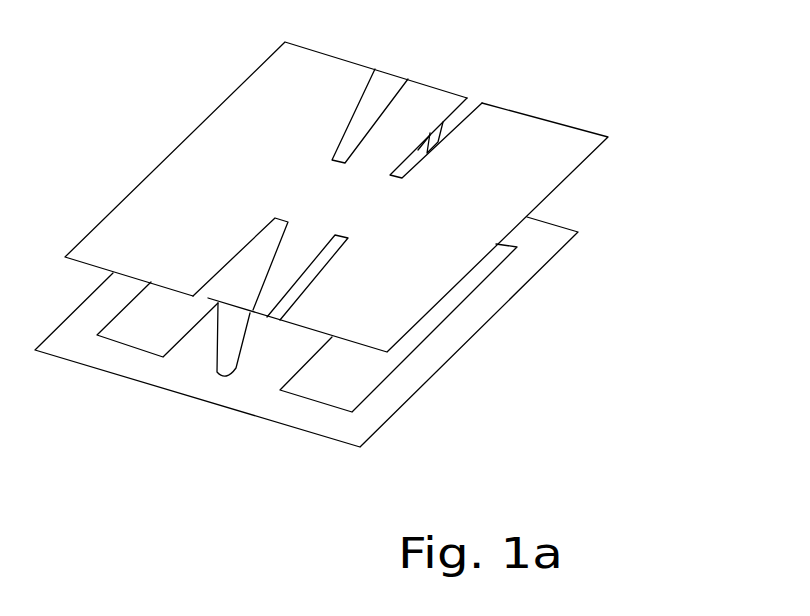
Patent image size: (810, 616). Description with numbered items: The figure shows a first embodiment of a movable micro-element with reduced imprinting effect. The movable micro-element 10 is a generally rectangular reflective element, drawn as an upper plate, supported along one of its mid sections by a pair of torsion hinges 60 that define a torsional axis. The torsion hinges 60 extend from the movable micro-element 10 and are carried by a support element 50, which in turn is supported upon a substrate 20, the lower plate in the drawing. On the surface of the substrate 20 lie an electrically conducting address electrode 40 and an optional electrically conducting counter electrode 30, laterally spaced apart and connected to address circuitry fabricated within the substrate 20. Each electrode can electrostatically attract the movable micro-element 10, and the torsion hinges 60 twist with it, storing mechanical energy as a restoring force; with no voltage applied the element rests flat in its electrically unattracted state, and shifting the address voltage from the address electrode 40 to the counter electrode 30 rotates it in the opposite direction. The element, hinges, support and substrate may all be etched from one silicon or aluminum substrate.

The movable micro-element 10 is at (336, 176).
The substrate 20 is at (362, 295).
The counter electrode 30 is at (398, 359).
The address electrode 40 is at (150, 381).
The support element 50 is at (362, 338).
The torsion hinge 60 is at (309, 169).